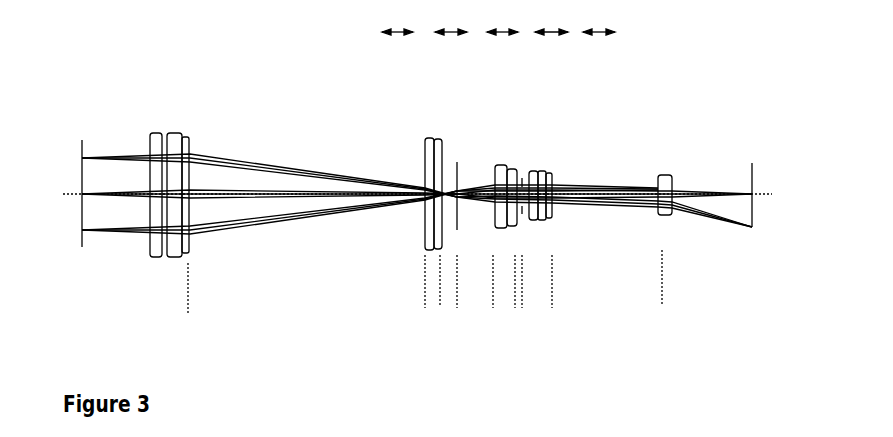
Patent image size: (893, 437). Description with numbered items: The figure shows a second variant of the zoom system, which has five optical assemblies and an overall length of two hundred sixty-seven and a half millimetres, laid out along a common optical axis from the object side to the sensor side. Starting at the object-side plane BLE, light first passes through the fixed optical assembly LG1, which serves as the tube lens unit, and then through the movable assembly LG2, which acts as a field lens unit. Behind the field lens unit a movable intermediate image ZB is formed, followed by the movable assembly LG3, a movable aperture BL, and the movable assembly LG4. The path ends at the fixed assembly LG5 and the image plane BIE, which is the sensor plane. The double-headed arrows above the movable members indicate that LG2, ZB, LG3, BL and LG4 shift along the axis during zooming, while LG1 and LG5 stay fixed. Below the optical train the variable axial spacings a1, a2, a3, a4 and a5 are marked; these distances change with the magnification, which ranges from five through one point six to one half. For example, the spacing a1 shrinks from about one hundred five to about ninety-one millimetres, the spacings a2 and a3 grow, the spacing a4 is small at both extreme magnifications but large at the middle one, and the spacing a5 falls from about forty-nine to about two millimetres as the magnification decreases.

The image plane BLE is at (85, 147).
The fixed optical assembly LG1 is at (140, 128).
The movable assembly LG2 is at (437, 127).
The intermediate image ZB is at (455, 148).
The movable assembly LG3 is at (503, 147).
The aperture BL is at (520, 163).
The movable assembly LG4 is at (545, 158).
The fixed assembly LG5 is at (663, 162).
The image plane BIE is at (752, 175).
The distance a1 is at (425, 292).
The distance a2 is at (477, 273).
The distance a3 is at (457, 292).
The distance a4 is at (500, 275).
The distance a5 is at (552, 292).